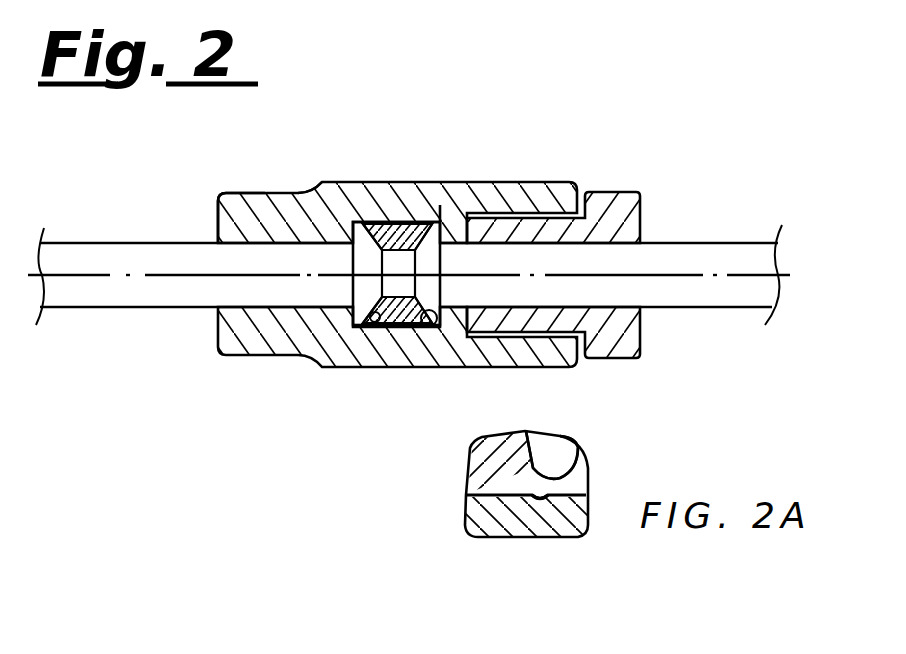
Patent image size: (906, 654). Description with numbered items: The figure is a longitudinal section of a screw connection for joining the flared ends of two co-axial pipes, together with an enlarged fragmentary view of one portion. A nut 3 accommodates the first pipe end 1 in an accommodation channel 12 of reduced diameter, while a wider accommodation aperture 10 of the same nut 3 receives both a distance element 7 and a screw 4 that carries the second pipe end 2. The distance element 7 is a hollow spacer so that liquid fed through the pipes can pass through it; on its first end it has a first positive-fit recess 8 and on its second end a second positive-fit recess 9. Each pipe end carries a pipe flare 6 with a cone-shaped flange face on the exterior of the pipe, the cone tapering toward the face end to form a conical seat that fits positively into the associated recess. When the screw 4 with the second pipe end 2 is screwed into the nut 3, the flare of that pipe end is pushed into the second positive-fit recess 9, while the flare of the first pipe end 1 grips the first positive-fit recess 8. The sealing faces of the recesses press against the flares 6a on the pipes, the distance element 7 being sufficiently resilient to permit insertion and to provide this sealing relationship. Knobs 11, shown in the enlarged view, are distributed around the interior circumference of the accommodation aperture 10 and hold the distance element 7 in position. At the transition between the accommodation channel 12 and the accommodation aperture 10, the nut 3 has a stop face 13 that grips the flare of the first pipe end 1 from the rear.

In FIG. 2, the first pipe end 1 is at (128, 290).
In FIG. 2, the second pipe end 2 is at (705, 260).
In FIG. 2, the nut 3 is at (333, 203).
In FIG. 2, the screw 4 is at (613, 223).
In FIG. 2, the pipe flare 6 is at (443, 195).
In FIG. 2, the flare 6a is at (427, 230).
In FIG. 2A, the flare 6a is at (552, 455).
In FIG. 2, the distance element 7 is at (412, 230).
In FIG. 2, the first positive-fit recess 8 is at (397, 227).
In FIG. 2A, the second positive-fit recess 9 is at (553, 436).
In FIG. 2, the accommodation aperture 10 is at (395, 340).
In FIG. 2A, the accommodation aperture 10 is at (463, 517).
In FIG. 2A, the knobs 11 is at (540, 500).
In FIG. 2, the accommodation channel 12 is at (263, 213).
In FIG. 2, the stop face 13 is at (313, 193).